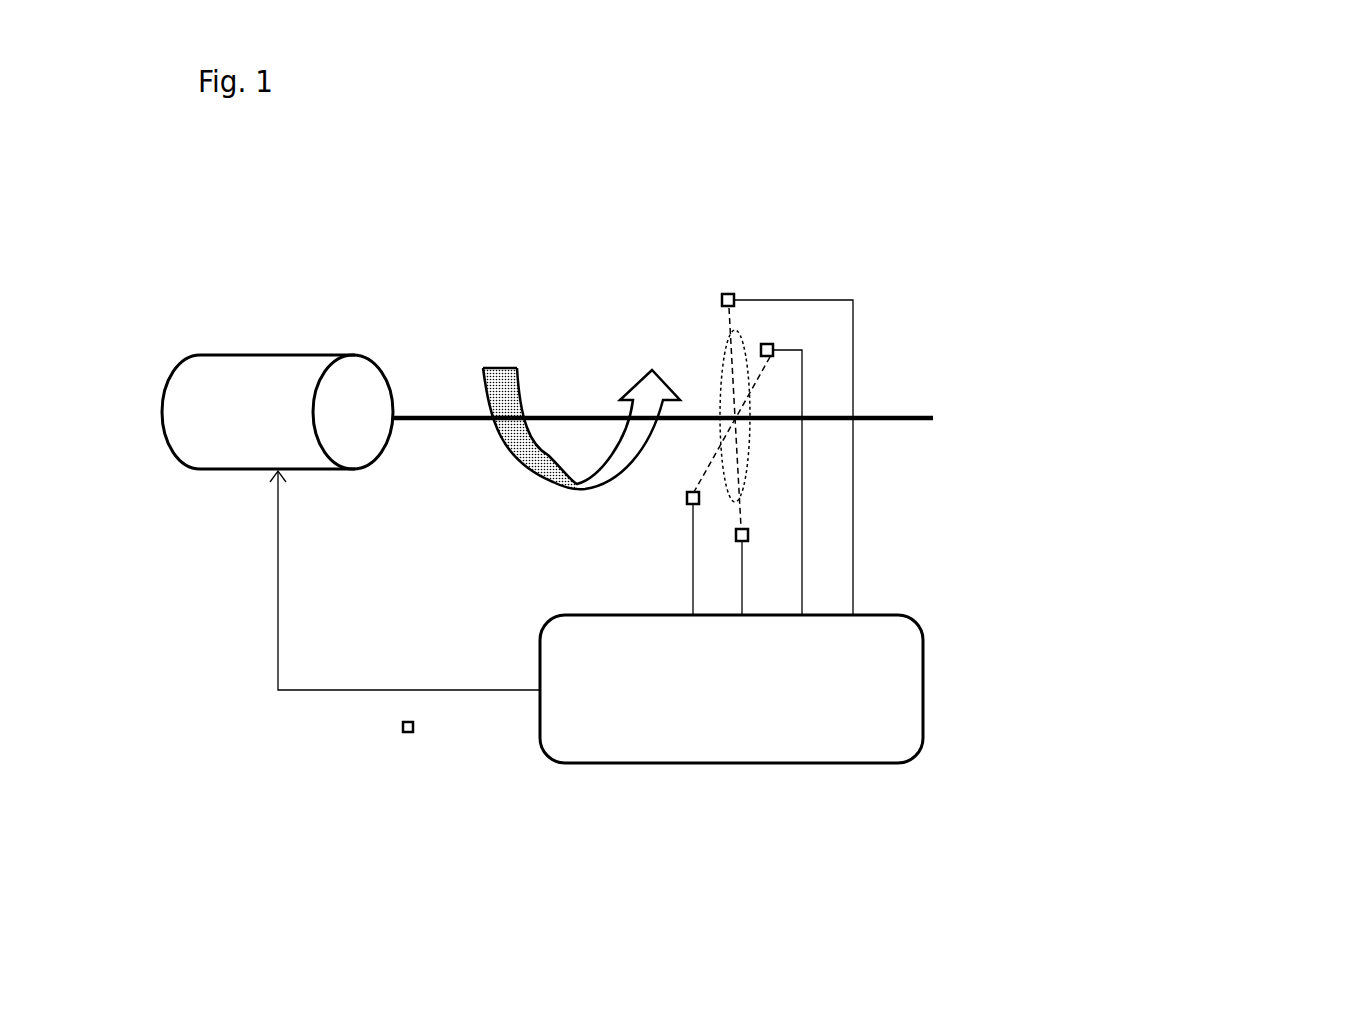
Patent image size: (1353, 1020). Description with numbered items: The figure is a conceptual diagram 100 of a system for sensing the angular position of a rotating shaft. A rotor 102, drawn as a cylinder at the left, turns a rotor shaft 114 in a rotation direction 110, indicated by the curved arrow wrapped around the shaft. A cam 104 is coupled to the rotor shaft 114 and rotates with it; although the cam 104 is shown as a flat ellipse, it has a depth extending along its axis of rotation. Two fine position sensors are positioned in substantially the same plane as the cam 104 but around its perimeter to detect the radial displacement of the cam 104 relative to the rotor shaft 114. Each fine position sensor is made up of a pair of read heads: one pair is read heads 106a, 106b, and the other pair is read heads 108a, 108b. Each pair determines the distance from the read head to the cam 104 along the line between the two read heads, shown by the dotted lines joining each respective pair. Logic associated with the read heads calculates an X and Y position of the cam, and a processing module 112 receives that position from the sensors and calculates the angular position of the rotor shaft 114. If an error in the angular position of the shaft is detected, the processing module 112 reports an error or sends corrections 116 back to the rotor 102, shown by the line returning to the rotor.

The conceptual diagram 100 is at (738, 433).
The rotor 102 is at (277, 412).
The cam 104 is at (712, 352).
The read head 106a is at (732, 295).
The read head 106b is at (748, 533).
The read head 108a is at (773, 346).
The read head 108b is at (687, 500).
The rotation direction 110 is at (507, 362).
The processing module 112 is at (731, 689).
The rotor shaft 114 is at (905, 410).
The corrections / error reporting 116 is at (497, 772).